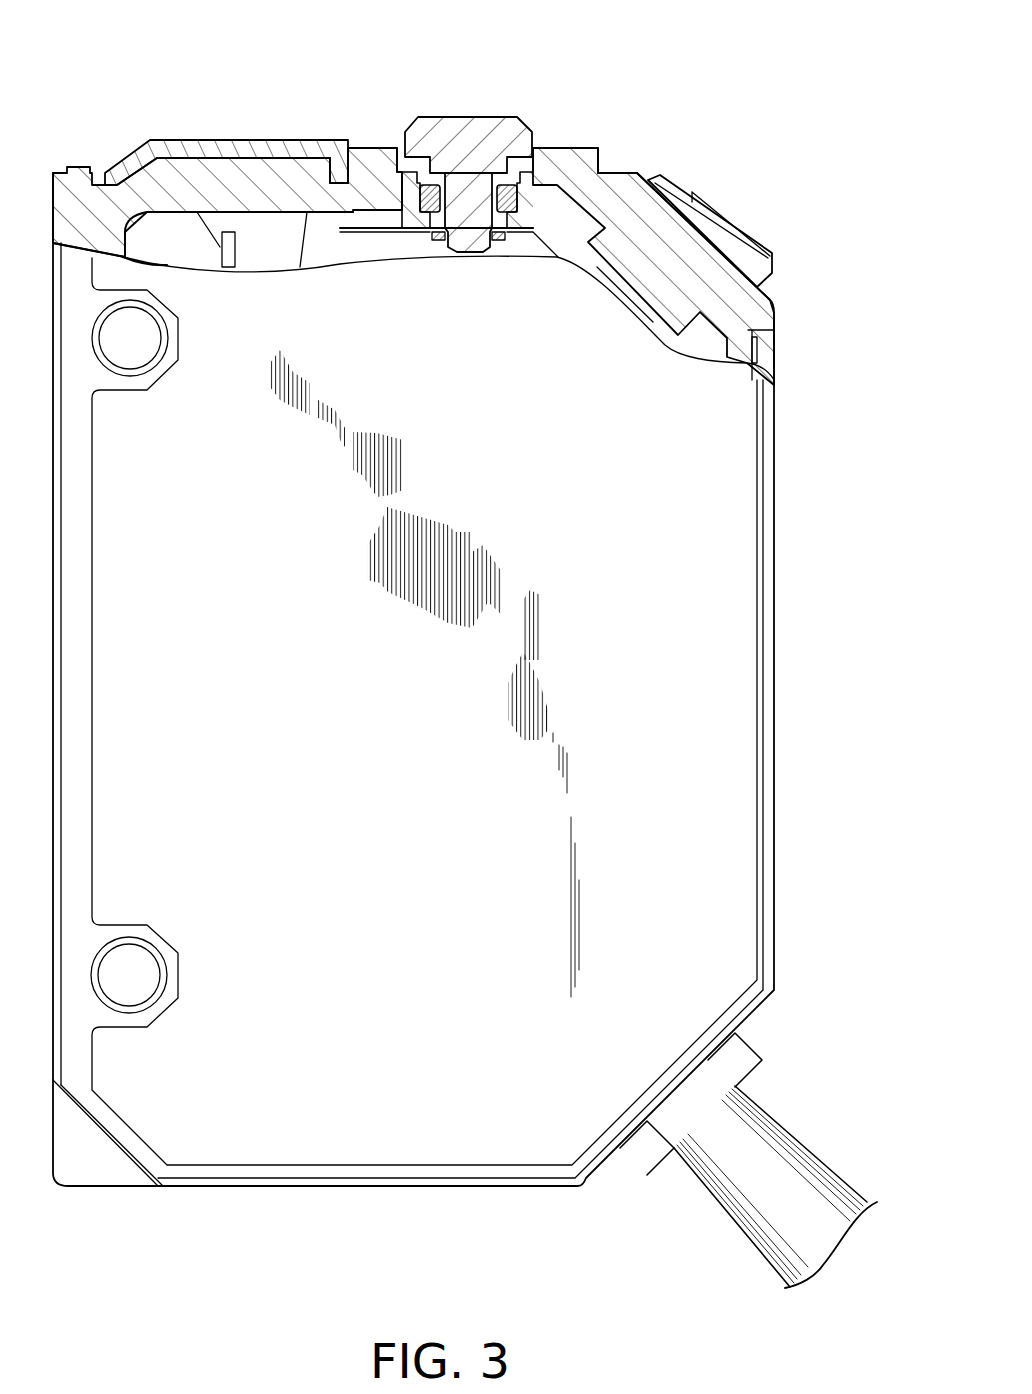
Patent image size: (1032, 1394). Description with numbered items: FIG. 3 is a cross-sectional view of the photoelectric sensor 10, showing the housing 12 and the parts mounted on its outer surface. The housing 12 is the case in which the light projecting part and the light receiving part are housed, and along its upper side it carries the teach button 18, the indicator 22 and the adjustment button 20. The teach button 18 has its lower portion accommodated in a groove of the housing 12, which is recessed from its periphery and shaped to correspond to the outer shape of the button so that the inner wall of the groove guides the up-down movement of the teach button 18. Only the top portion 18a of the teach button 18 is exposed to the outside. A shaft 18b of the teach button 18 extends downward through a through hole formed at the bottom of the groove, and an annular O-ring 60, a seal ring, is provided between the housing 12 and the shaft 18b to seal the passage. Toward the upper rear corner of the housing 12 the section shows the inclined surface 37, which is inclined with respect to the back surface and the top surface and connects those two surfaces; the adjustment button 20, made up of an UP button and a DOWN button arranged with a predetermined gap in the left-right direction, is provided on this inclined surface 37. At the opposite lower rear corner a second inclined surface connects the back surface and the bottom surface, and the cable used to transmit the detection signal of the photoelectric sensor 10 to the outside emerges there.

The photoelectric sensor 10 is at (866, 29).
The housing 12 is at (780, 652).
The teach button 18 is at (438, 105).
The top portion 18a is at (476, 132).
The shaft 18b is at (469, 207).
The adjustment button 20 is at (743, 222).
The indicator 22 is at (238, 148).
The inclined surface 37 is at (776, 296).
The O-ring 60 is at (490, 202).